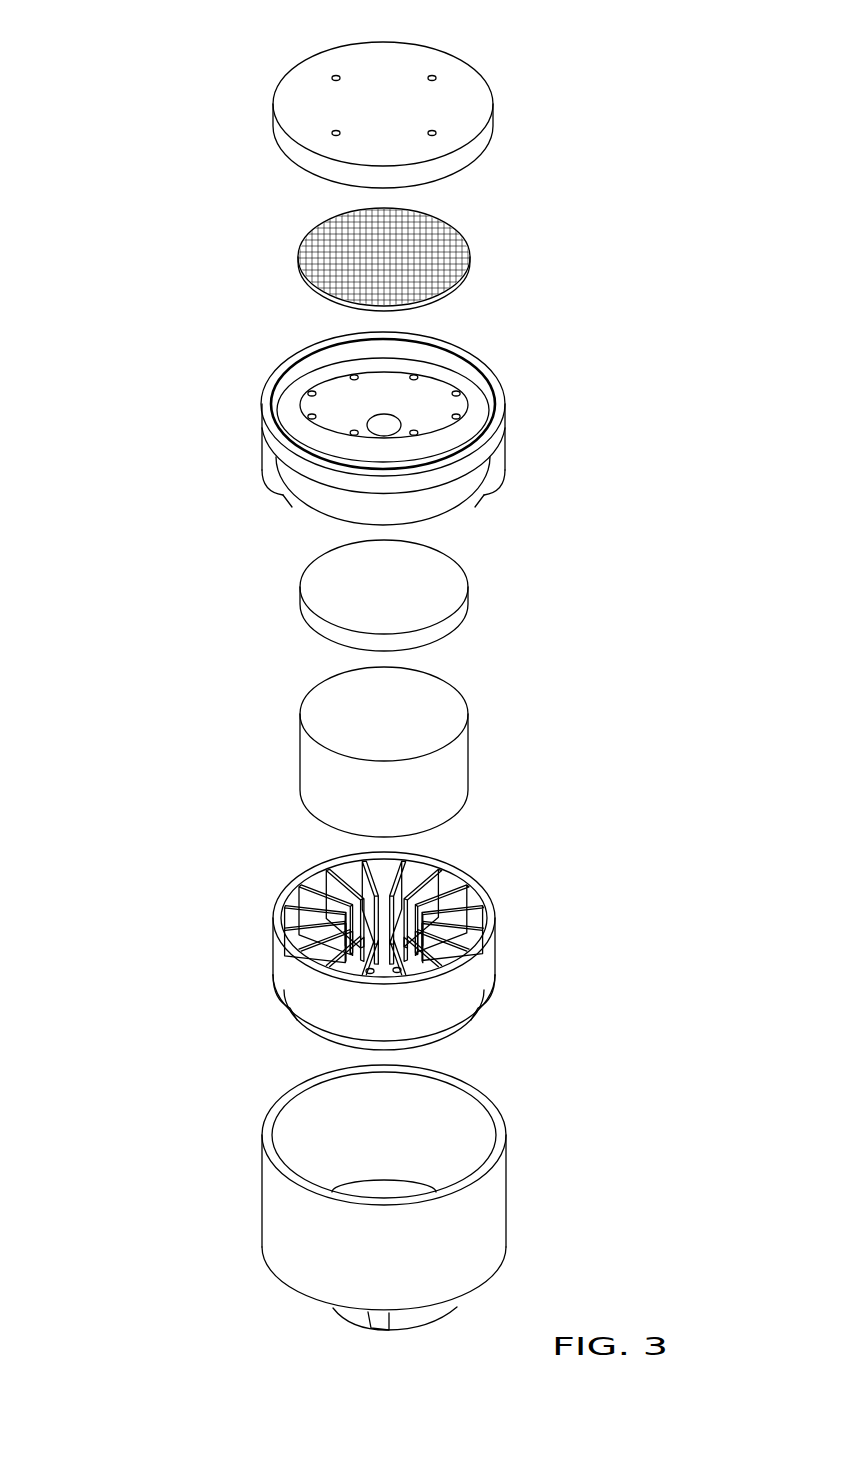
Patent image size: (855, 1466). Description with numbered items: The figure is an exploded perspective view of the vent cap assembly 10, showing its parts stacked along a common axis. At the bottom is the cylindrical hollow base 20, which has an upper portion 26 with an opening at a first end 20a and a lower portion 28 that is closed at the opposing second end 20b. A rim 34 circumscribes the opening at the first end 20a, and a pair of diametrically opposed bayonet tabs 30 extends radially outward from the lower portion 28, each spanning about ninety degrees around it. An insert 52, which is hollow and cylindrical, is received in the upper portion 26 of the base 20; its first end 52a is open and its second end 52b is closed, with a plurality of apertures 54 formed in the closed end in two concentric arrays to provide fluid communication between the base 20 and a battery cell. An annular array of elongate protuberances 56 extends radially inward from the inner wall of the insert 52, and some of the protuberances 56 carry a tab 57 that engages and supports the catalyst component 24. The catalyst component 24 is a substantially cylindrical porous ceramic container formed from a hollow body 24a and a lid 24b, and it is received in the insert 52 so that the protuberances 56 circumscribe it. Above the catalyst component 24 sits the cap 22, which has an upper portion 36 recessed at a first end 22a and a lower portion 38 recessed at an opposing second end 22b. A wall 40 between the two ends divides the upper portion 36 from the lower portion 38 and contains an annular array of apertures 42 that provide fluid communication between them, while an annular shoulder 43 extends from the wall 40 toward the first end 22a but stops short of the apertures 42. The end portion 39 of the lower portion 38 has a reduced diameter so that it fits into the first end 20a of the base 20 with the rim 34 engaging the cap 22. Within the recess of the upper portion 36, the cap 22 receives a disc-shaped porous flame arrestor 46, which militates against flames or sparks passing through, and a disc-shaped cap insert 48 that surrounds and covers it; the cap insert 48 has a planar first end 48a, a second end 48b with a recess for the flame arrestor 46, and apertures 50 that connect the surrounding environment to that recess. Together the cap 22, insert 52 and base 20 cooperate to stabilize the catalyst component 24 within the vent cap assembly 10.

The vent cap assembly 10 is at (110, 72).
The cylindrical hollow base 20 is at (376, 1206).
The first end of the base 20a is at (266, 1122).
The second end of the base 20b is at (350, 1318).
The cap 22 is at (392, 423).
The first end of the cap 22a is at (407, 372).
The second end of the cap 22b is at (425, 522).
The catalyst component 24 is at (452, 688).
The hollow body 24a is at (468, 768).
The lid 24b is at (468, 595).
The upper portion of the base 26 is at (495, 1232).
The lower portion of the base 28 is at (333, 1308).
The bayonet tabs 30 is at (420, 1326).
The rim 34 is at (502, 1118).
The upper portion of the cap 36 is at (262, 428).
The lower portion of the cap 38 is at (276, 485).
The end portion 39 is at (293, 500).
The wall 40 is at (437, 402).
The apertures 42 is at (445, 333).
The annular shoulder 43 is at (287, 408).
The flame arrestor 46 is at (470, 262).
The cap insert 48 is at (379, 98).
The first end of the cap insert 48a is at (298, 90).
The second end of the cap insert 48b is at (287, 158).
The apertures 50 is at (432, 78).
The insert 52 is at (381, 951).
The first end of the insert 52a is at (275, 910).
The second end of the insert 52b is at (288, 1005).
The apertures 54 is at (400, 953).
The elongate protuberances 56 is at (398, 965).
The tab 57 is at (332, 943).